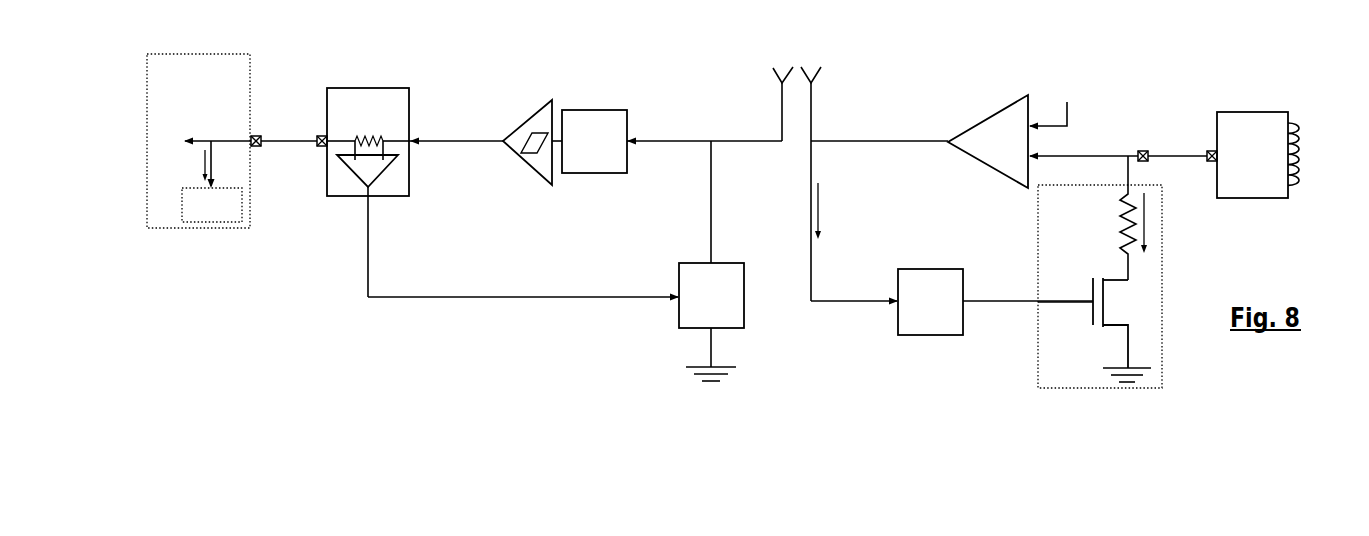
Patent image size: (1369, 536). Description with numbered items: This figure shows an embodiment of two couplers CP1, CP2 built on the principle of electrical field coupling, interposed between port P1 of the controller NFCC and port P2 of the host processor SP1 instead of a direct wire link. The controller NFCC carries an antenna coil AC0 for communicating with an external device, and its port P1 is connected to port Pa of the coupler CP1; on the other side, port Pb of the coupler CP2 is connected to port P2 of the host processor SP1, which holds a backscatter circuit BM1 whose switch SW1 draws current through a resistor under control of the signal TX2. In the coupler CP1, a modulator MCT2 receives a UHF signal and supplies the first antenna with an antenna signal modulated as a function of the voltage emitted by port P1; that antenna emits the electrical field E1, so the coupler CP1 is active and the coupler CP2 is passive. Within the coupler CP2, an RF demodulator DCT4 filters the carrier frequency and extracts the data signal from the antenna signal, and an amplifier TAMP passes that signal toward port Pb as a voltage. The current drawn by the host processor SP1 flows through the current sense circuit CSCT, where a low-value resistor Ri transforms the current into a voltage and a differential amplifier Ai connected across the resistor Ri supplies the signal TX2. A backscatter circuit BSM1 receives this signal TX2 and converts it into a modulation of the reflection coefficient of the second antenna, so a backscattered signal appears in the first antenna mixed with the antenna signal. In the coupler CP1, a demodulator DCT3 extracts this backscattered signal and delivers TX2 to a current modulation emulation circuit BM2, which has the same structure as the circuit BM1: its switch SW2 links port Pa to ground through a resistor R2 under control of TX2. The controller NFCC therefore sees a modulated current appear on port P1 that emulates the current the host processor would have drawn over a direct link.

The host processor SP1 is at (231, 80).
The backscatter circuit BM1 is at (234, 214).
The port P2 is at (259, 135).
The switch SW1 is at (288, 135).
The port Pb is at (320, 148).
The current sense circuit CSCT is at (392, 110).
The resistor Ri is at (369, 134).
The differential amplifier Ai is at (378, 174).
The amplifier TAMP is at (547, 103).
The RF demodulator DCT4 is at (617, 150).
The electrical field E1 is at (813, 55).
The modulator circuit MCT2 is at (990, 112).
The port Pa is at (1143, 150).
The switch SW2 is at (1083, 326).
The port P1 is at (1212, 150).
The controller NFCC is at (1278, 162).
The antenna coil AC0 is at (1308, 125).
The current modulation emulation circuit BM2 is at (1082, 204).
The resistor R2 is at (1114, 218).
The backscatter circuit BSM1 is at (738, 304).
The demodulator DCT3 is at (957, 310).
The coupler CP1 is at (870, 315).
The coupler CP2 is at (478, 315).
The signal TX2 is at (730, 290).